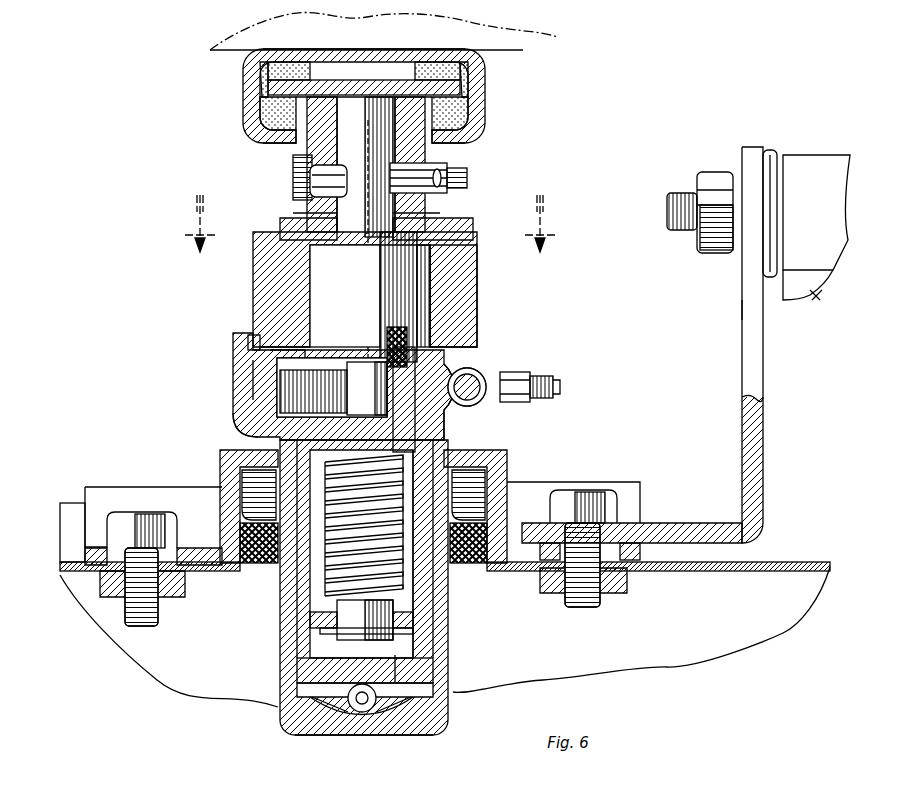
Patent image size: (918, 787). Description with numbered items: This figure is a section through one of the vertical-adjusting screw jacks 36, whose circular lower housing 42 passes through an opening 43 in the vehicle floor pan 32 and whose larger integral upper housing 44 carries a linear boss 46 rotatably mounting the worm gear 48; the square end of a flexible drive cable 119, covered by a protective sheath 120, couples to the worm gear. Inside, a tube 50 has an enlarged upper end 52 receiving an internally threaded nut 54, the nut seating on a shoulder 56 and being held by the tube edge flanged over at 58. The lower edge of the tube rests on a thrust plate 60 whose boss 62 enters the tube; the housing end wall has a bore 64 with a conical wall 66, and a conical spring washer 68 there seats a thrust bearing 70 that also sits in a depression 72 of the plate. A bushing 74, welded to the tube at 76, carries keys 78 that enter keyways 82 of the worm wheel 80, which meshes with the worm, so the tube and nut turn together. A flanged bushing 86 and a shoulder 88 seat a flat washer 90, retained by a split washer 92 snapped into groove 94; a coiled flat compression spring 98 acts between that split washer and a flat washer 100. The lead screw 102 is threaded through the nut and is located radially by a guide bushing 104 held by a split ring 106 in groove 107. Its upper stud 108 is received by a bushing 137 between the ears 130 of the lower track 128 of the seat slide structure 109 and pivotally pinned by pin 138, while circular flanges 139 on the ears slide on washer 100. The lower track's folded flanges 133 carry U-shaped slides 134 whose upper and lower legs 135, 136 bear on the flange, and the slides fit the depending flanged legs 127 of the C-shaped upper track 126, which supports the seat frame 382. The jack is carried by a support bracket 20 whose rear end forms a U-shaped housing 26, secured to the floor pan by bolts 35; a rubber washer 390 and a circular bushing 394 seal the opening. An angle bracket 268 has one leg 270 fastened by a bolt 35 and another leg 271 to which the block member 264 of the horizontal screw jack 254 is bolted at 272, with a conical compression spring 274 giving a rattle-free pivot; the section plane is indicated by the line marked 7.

The section line 7- 7 is at (369, 233).
The frame 382 is at (518, 42).
The seat slide structure 109 is at (359, 93).
The depending flanged legs 127 is at (245, 90).
The upper leg 135 is at (300, 70).
The lower track 128 is at (395, 86).
The upper track 126 is at (375, 58).
The slide 134 is at (262, 85).
The lower leg 136 is at (283, 122).
The folded flanges 133 is at (270, 136).
The ears 130 is at (370, 133).
The stud 108 is at (385, 150).
The bushing 137 is at (330, 210).
The pin 138 is at (457, 178).
The flange 139 is at (300, 228).
The flat washer 100 is at (386, 283).
The flanged upper edge 58 is at (320, 250).
The compression spring 98 is at (465, 258).
The nut 54 is at (430, 283).
The flanged bushing 86 is at (385, 350).
The enlarged upper end 52 is at (393, 360).
The upper housing 44 is at (255, 405).
The split washer 92 is at (252, 342).
The groove 94 is at (250, 348).
The shoulder 88 is at (262, 358).
The flat washer 90 is at (255, 375).
The worm wheel 80 is at (300, 425).
The keyways 82 is at (320, 380).
The keys 78 is at (367, 390).
The bushing 74 is at (260, 435).
The shoulder 56 is at (480, 420).
The boss 46 is at (515, 408).
The worm gear 48 is at (478, 370).
The sheath 120 is at (520, 372).
The flexible drive cable 119 is at (556, 387).
The screw jack 36 is at (370, 599).
The lower housing 42 is at (445, 648).
The tube 50 is at (428, 600).
The opening 43 is at (440, 585).
The lead screw 102 is at (315, 585).
The guide bushing 104 is at (320, 618).
The groove 107 is at (370, 640).
The split ring 106 is at (325, 632).
The boss 62 is at (305, 668).
The depression 72 is at (393, 668).
The thrust plate 60 is at (290, 705).
The thrust bearing 70 is at (368, 712).
The conically shaped lower wall 66 is at (340, 715).
The spring washer 68 is at (395, 715).
The bore 64 is at (300, 722).
The support bracket 20 is at (215, 572).
The floor pan 32 is at (795, 572).
The housing 26 is at (495, 456).
The rubber washer 390 is at (475, 568).
The weld 76 is at (276, 480).
The bushing 394 is at (505, 476).
The bolts 35 is at (145, 515).
The leg 270 is at (680, 523).
The angle bracket 268 is at (768, 375).
The leg 271 is at (742, 318).
The compression spring 274 is at (768, 152).
The block member 264 is at (812, 158).
The screw jack 254 is at (818, 300).
The bolt 272 is at (680, 200).